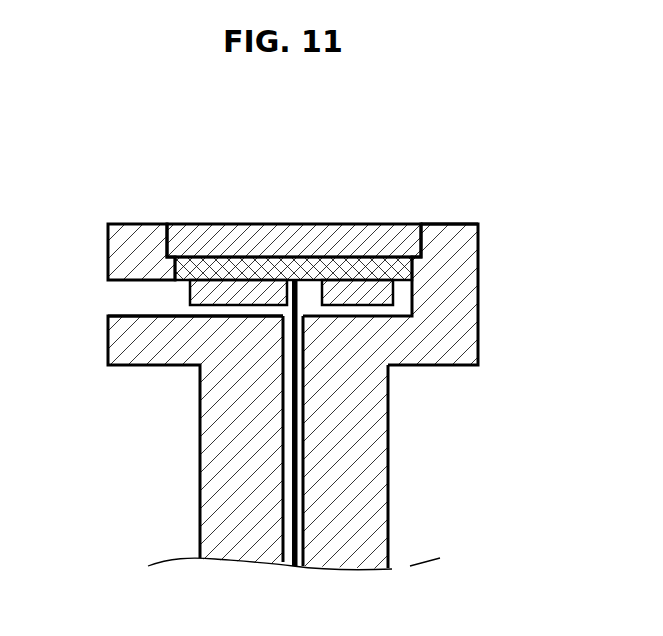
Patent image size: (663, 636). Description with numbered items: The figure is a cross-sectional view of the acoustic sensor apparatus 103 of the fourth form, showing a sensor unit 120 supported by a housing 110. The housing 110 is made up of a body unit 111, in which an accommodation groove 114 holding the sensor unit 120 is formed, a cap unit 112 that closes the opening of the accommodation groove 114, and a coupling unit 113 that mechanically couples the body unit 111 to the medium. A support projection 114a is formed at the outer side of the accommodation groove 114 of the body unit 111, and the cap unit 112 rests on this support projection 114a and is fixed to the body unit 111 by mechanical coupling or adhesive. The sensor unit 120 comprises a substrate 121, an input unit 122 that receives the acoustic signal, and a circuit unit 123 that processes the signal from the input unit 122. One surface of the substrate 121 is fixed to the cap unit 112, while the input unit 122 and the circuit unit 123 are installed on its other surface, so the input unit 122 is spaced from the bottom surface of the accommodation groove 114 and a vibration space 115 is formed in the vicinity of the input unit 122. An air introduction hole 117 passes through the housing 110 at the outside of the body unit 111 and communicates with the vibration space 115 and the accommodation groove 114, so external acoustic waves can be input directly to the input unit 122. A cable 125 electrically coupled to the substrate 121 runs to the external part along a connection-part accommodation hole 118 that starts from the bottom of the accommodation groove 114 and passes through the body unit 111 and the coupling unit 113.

The vibration device 103 is at (208, 115).
The housing 110 is at (456, 432).
The body unit 111 is at (460, 346).
The cap unit 112 is at (379, 236).
The coupling unit 113 is at (389, 470).
The accommodation groove 114 is at (400, 299).
The support projection 114a is at (435, 224).
The vibration space 115 is at (314, 300).
The air introduction hole 117 is at (125, 312).
The connection-part accommodation hole 118 is at (288, 493).
The sensor unit 120 is at (197, 317).
The substrate 121 is at (185, 267).
The input unit 122 is at (201, 293).
The circuit unit 123 is at (378, 298).
The cable 125 is at (292, 442).